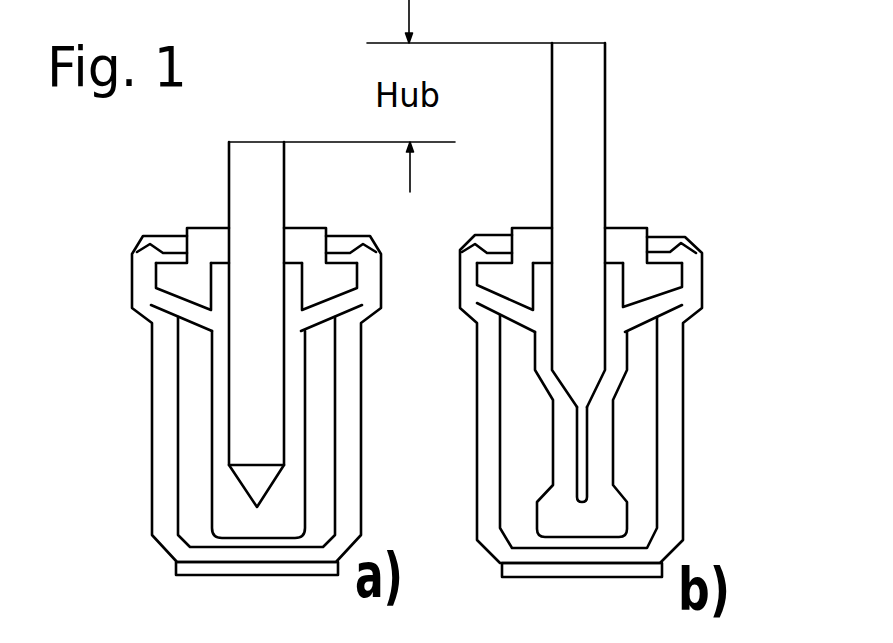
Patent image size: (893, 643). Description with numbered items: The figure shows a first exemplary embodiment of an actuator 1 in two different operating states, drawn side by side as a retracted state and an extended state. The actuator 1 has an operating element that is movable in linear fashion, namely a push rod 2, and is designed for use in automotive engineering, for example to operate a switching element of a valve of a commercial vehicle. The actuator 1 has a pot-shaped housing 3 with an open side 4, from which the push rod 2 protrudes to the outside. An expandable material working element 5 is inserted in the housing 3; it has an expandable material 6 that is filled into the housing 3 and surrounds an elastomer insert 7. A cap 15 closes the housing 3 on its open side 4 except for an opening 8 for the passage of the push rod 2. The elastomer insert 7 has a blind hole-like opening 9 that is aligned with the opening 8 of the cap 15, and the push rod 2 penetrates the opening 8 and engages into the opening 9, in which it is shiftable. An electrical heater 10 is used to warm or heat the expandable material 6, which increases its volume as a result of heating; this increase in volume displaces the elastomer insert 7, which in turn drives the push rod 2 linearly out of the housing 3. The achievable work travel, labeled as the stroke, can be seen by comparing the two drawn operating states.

The actuator 1 is at (197, 210).
The push rod 2 is at (263, 200).
The housing 3 is at (352, 458).
The open side 4 is at (338, 240).
The expandable material working element 5 is at (203, 483).
The expandable material 6 is at (197, 525).
The elastomer insert 7 is at (273, 525).
The opening 8 is at (228, 245).
The opening 9 is at (290, 410).
The electrical heater 10 is at (222, 577).
The cap 15 is at (330, 282).